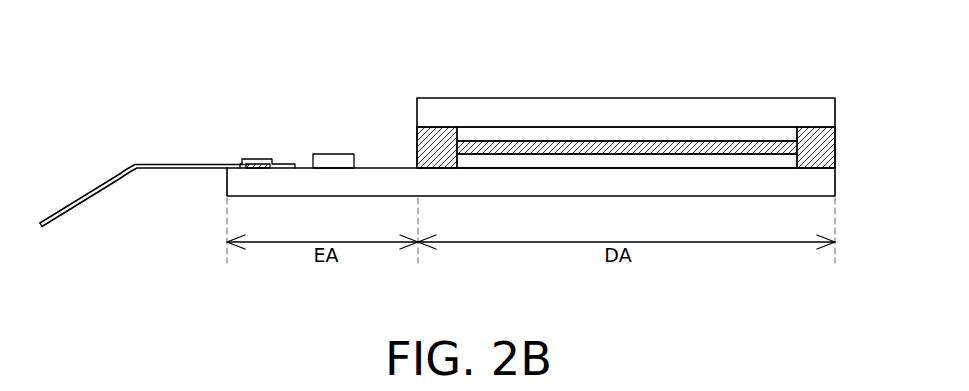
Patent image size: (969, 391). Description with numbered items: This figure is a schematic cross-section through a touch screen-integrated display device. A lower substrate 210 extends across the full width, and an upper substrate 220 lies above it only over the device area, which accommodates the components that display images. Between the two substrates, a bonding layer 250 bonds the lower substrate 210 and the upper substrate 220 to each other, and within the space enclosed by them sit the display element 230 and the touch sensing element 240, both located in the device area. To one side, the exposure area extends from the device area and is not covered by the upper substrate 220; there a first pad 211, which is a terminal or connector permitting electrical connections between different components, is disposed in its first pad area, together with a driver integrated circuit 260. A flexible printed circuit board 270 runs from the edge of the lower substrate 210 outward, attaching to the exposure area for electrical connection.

The lower substrate 210 is at (820, 181).
The first pad 211 is at (254, 163).
The upper substrate 220 is at (820, 109).
The display element 230 is at (695, 163).
The touch sensing element 240 is at (533, 133).
The bonding layer 250 is at (820, 142).
The driver integrated circuit 260 is at (330, 165).
The flexible printed circuit board 270 is at (68, 207).